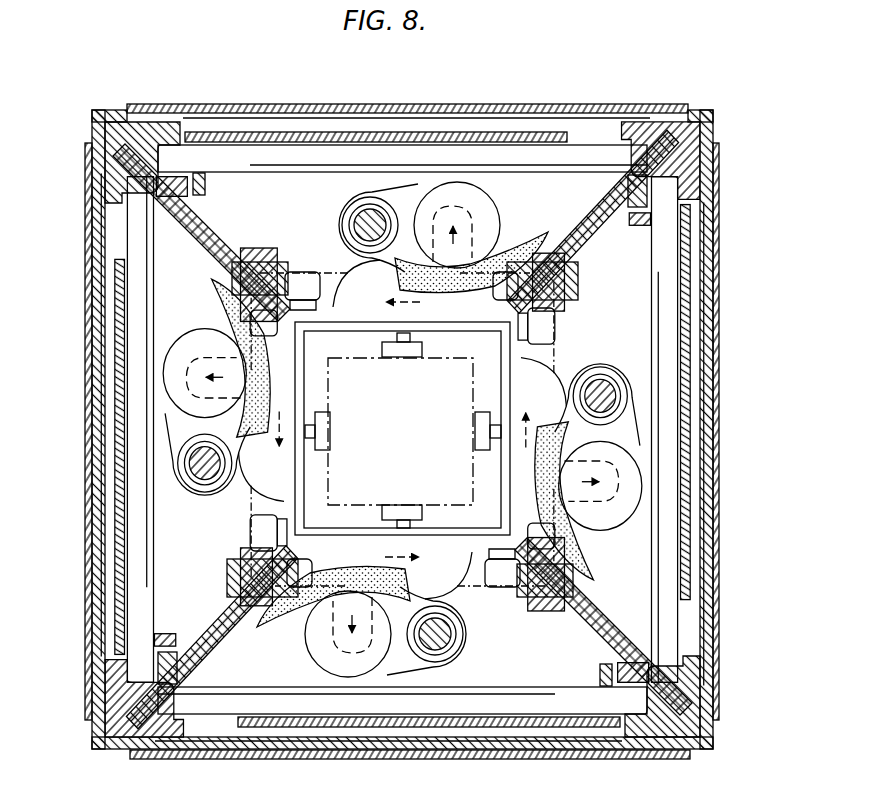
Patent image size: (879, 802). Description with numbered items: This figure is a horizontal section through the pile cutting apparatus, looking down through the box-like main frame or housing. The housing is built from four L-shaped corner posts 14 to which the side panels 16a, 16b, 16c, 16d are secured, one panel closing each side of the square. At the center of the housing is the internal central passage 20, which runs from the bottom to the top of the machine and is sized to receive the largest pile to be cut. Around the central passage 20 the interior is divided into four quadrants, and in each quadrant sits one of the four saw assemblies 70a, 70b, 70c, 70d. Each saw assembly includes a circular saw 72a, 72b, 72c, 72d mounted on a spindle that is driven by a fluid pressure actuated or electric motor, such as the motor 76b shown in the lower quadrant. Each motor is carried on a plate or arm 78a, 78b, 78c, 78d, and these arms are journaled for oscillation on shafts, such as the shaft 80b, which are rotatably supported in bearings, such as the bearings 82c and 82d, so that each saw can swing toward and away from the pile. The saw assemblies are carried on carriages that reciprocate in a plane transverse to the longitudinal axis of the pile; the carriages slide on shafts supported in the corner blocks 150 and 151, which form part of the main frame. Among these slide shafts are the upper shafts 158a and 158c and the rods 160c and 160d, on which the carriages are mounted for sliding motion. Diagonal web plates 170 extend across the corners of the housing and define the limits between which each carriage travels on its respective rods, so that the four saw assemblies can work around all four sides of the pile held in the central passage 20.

The corner post 14 is at (110, 127).
The corner block 150 is at (147, 137).
The diagonal web plate 170 is at (705, 176).
The corner block 151 is at (270, 272).
The central passage 20 is at (310, 511).
The side panel 16a is at (375, 194).
The side panel 16b is at (469, 750).
The side panel 16c is at (713, 483).
The side panel 16d is at (177, 466).
The saw assembly 70a is at (238, 196).
The saw assembly 70b is at (517, 676).
The saw assembly 70c is at (628, 290).
The saw assembly 70d is at (178, 524).
The circular saw 72a is at (548, 242).
The circular saw 72b is at (260, 633).
The circular saw 72c is at (600, 573).
The circular saw 72d is at (210, 282).
The motor 76b is at (337, 664).
The plate or arm 78a is at (422, 198).
The plate or arm 78b is at (405, 668).
The plate or arm 78c is at (632, 437).
The plate or arm 78d is at (173, 427).
The shaft 80b is at (433, 666).
The bearing 82c is at (614, 394).
The bearing 82d is at (192, 468).
The upper shaft 158a is at (588, 152).
The upper shaft 158c is at (668, 570).
The upper shaft 160c is at (553, 337).
The upper shaft 160d is at (307, 280).